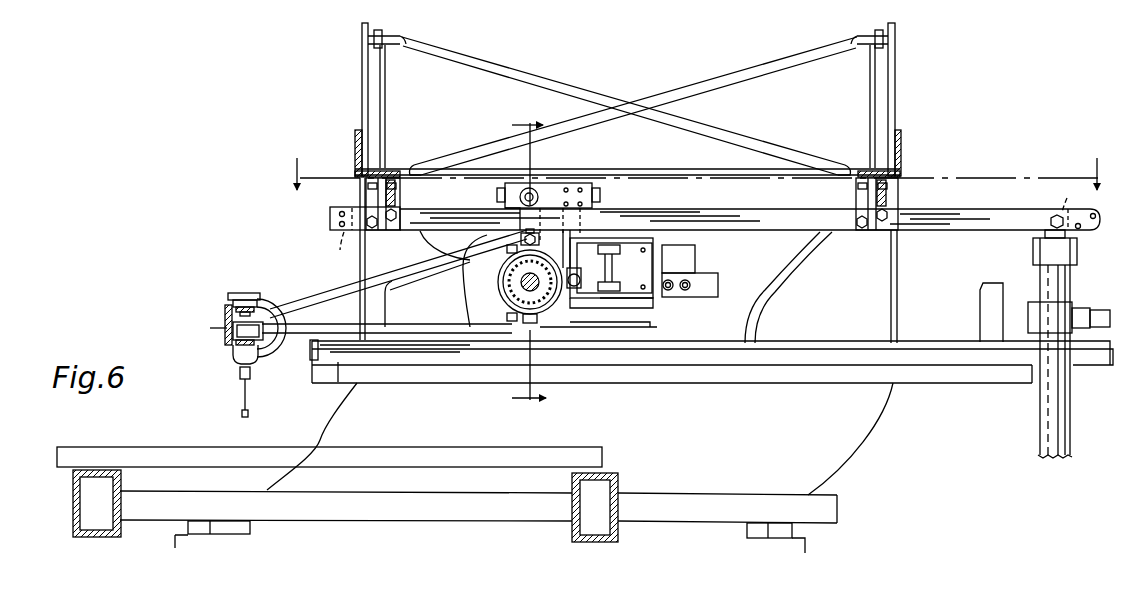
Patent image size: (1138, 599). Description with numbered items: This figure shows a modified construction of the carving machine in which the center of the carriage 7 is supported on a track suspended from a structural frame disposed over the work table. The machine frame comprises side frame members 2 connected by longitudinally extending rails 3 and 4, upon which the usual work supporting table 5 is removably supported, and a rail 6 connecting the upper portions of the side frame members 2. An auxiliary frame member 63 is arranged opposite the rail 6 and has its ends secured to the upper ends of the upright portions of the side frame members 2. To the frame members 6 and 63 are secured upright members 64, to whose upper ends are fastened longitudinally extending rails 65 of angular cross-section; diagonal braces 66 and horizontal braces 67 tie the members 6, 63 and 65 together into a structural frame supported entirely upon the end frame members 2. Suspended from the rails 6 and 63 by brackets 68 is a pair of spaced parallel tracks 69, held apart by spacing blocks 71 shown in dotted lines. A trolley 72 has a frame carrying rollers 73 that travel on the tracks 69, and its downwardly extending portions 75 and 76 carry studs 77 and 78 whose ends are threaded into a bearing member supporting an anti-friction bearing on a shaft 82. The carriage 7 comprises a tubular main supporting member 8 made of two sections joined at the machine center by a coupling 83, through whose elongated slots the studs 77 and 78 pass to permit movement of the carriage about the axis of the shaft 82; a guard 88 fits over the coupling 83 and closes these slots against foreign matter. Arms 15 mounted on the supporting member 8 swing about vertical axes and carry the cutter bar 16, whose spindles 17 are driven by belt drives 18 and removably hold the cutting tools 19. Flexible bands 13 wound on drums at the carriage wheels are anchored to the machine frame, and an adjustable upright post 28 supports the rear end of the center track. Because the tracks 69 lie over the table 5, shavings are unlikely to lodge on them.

The side frame member 2 is at (377, 252).
The longitudinally extending rail 3 is at (73, 497).
The longitudinally extending rail 4 is at (636, 490).
The work supporting table 5 is at (164, 444).
The longitudinally extending rail 6 is at (355, 143).
The carriage 7 is at (692, 176).
The main supporting member 8 is at (506, 294).
The flexible band 13 is at (921, 346).
The arm 15 is at (294, 302).
The cutter bar 16 is at (225, 328).
The spindle 17 is at (250, 375).
The belt drive 18 is at (396, 338).
The cutting tool 19 is at (249, 413).
The upright post 28 is at (1078, 432).
The auxiliary frame member 63 is at (901, 148).
The upright member 64 is at (362, 100).
The longitudinally extending rail 65 is at (386, 35).
The diagonal brace 66 is at (572, 92).
The horizontal brace 67 is at (639, 172).
The bracket 68 is at (370, 195).
The track 69 is at (765, 231).
The spacing block 71 is at (702, 226).
The trolley 72 is at (562, 180).
The roller 73 is at (532, 190).
The downwardly extending portion 75 is at (518, 215).
The downwardly extending portion 76 is at (604, 238).
The stud 77 is at (539, 244).
The stud 78 is at (581, 280).
The shaft 82 is at (527, 287).
The coupling 83 is at (506, 290).
The guard 88 is at (509, 262).